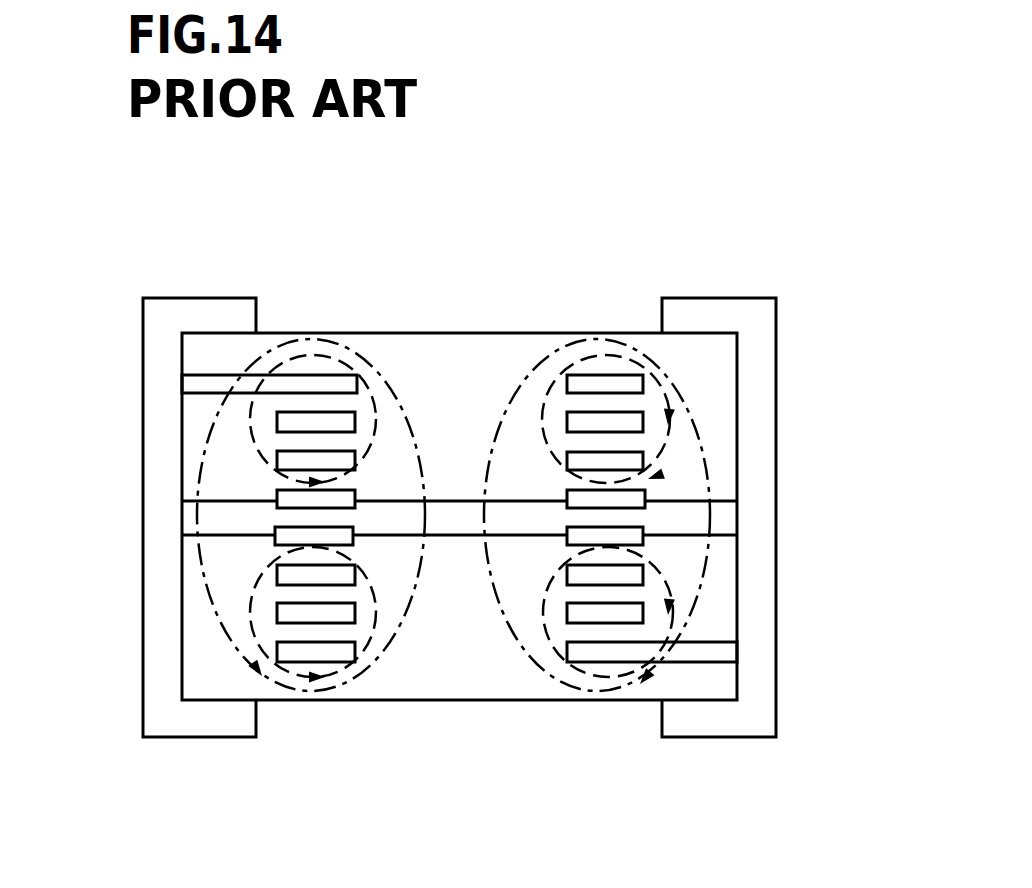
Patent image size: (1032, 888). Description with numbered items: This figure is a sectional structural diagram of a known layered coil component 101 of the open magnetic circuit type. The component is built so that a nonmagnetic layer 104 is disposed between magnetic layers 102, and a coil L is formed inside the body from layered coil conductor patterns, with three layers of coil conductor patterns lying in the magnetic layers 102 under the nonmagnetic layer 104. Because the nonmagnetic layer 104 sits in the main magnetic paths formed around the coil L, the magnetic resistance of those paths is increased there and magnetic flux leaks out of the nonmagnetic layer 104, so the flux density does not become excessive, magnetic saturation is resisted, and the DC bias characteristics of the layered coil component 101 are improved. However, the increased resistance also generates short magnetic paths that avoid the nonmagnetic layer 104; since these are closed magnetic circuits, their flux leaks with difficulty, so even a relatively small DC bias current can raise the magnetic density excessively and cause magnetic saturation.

The layered coil component 101 is at (228, 218).
The magnetic layers 102 is at (428, 682).
The nonmagnetic layer 104 is at (457, 513).
The coil L is at (655, 477).